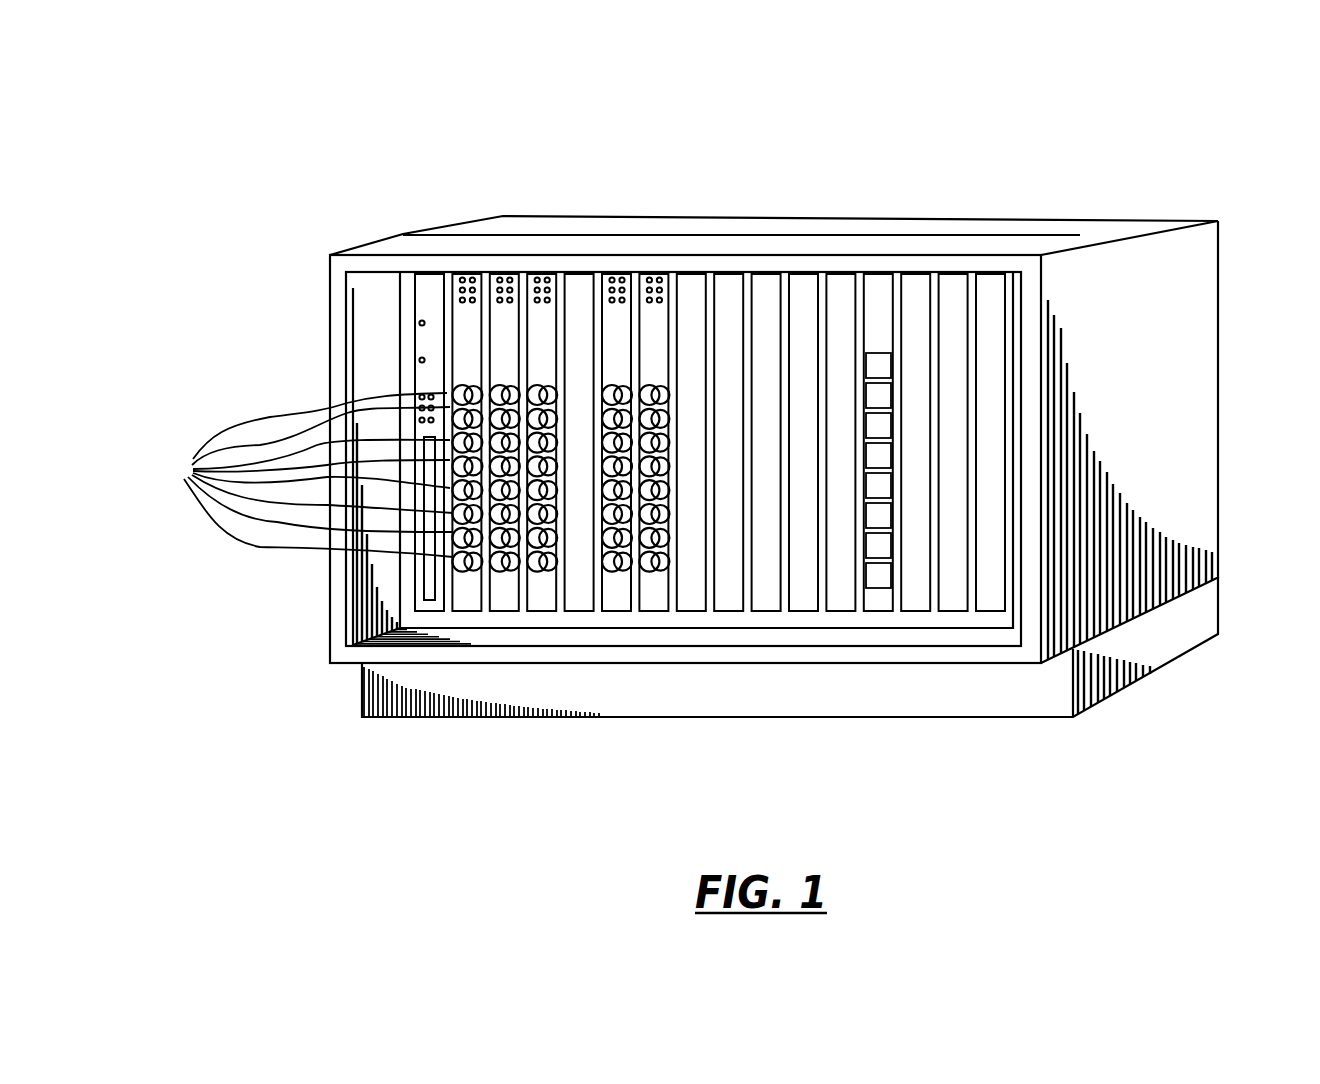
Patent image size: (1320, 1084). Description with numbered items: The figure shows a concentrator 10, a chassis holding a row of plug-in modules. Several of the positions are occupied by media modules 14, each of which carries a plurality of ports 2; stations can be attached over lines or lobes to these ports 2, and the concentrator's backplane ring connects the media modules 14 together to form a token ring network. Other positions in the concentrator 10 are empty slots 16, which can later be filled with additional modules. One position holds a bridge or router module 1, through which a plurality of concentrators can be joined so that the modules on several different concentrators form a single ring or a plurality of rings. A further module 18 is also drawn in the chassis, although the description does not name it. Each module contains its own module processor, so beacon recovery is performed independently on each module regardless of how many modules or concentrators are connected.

The concentrator 10 is at (1222, 275).
The empty slots 16 is at (580, 292).
The control card 18 is at (430, 290).
The bridge or router module 1 is at (873, 293).
The media modules 14 is at (462, 598).
The ports 2 is at (311, 475).